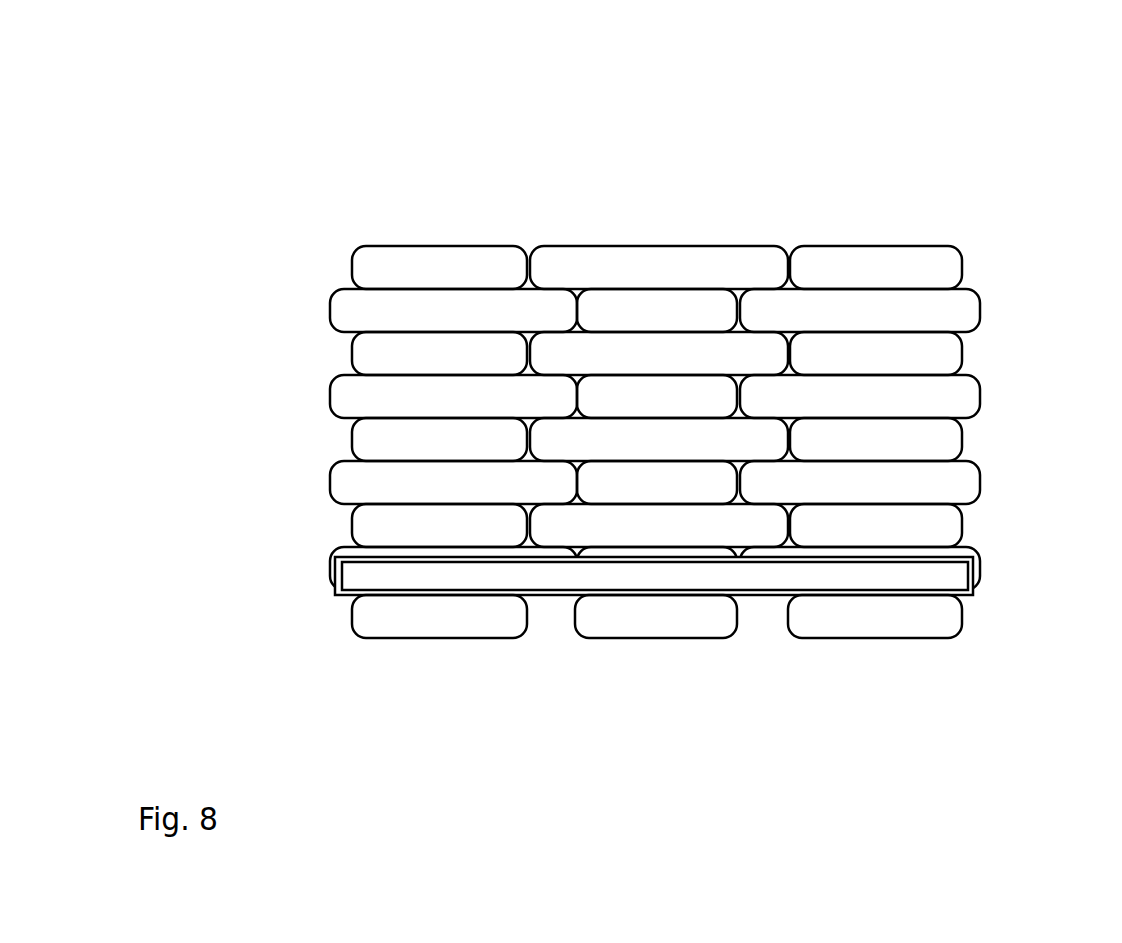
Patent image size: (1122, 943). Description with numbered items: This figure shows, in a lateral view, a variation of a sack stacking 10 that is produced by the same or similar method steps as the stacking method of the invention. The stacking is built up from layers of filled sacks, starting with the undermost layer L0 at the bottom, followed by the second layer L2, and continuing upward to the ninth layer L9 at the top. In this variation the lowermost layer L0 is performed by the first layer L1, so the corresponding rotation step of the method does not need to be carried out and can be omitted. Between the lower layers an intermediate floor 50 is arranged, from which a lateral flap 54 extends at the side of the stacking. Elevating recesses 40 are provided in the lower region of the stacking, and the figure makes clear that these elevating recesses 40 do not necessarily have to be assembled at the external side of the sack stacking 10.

The sack stacking 10 is at (466, 98).
The elevating recess 40 is at (561, 641).
The intermediate floor 50 is at (697, 557).
The lateral flap 54 is at (352, 574).
The undermost layer L0 is at (953, 616).
The first layer L1 is at (360, 617).
The second layer L2 is at (965, 548).
The ninth layer L9 is at (955, 270).